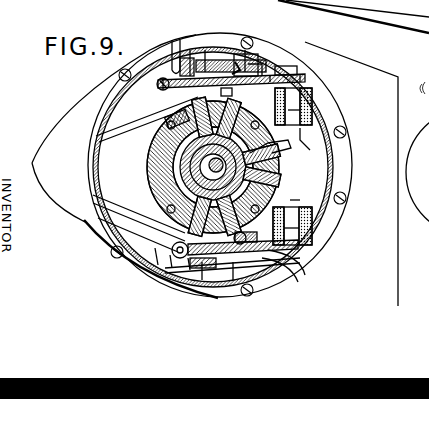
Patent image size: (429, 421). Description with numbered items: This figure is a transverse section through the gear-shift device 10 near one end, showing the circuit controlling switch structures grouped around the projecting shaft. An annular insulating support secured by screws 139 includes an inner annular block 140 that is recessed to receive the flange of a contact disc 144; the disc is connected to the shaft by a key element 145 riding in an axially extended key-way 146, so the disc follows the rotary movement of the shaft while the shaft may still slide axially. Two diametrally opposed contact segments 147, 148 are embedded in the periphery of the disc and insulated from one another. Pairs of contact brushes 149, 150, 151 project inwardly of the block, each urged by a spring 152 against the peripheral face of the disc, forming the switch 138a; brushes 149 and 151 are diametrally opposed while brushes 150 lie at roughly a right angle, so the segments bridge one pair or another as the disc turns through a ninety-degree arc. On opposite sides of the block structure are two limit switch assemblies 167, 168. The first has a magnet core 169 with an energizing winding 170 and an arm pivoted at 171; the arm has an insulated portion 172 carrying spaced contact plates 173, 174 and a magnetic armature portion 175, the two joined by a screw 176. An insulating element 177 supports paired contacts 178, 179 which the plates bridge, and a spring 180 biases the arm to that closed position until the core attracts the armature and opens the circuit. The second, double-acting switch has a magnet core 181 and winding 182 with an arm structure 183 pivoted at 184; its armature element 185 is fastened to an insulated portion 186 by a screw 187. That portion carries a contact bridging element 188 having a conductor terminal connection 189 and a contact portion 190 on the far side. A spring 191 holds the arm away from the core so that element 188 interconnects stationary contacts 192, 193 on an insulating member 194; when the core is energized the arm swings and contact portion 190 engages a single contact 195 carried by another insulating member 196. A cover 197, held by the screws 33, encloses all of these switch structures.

The housing 10 is at (121, 284).
The screws 33 is at (345, 201).
The switch 138a is at (301, 153).
The screws 139 is at (167, 108).
The inner annular block 140 is at (273, 191).
The contact disc 144 is at (150, 160).
The key element 145 is at (153, 170).
The key-way 146 is at (149, 185).
The contact segment 147 is at (152, 145).
The contact segment 148 is at (155, 201).
The contact brushes 149 is at (168, 124).
The contact brushes 150 is at (280, 152).
The contact brushes 151 is at (166, 235).
The spring 152 is at (240, 114).
The limit switch assembly 167 is at (206, 58).
The limit switch assembly 168 is at (202, 270).
The magnet core 169 is at (300, 100).
The energizing winding 170 is at (293, 110).
The pivot 171 is at (163, 88).
The insulated portion 172 is at (226, 92).
The contact plate 173 is at (174, 46).
The contact plate 174 is at (282, 60).
The magnetic armature portion 175 is at (302, 77).
The screw 176 is at (308, 68).
The insulating element 177 is at (262, 55).
The paired contacts 178 is at (190, 57).
The paired contacts 179 is at (232, 68).
The spring 180 is at (288, 66).
The magnet core 181 is at (313, 218).
The energizing winding 182 is at (305, 233).
The arm structure 183 is at (170, 268).
The pivot 184 is at (155, 265).
The armature element 185 is at (298, 258).
The insulated portion 186 is at (293, 276).
The screw 187 is at (306, 272).
The contact bridging element 188 is at (244, 292).
The conductor terminal connection 189 is at (123, 258).
The contact portion 190 is at (287, 290).
The spring 191 is at (282, 287).
The stationary contact 192 is at (188, 268).
The stationary contact 193 is at (275, 290).
The insulating member 194 is at (233, 278).
The single contact 195 is at (297, 248).
The insulating member 196 is at (236, 246).
The cover 197 is at (333, 177).